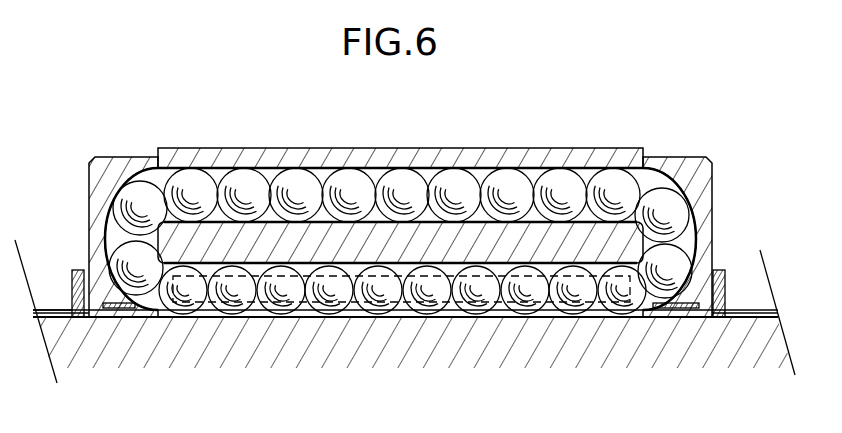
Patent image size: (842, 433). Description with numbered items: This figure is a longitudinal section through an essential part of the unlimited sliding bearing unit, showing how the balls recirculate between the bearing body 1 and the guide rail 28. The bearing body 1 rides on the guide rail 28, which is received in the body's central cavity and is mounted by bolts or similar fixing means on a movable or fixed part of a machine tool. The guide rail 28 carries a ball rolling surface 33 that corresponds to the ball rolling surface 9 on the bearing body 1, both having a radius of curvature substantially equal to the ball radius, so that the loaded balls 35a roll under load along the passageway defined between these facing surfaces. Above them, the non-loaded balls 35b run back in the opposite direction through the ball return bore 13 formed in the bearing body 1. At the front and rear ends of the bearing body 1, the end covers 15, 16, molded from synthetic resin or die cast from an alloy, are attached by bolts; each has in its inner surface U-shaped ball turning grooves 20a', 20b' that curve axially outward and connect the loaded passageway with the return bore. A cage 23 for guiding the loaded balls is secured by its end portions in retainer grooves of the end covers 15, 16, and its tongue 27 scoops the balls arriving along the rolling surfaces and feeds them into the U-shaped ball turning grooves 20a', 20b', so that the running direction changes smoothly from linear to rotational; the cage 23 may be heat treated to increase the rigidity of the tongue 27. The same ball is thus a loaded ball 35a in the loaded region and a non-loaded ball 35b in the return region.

The bearing body 1 is at (520, 165).
The ball rolling surface 9 is at (302, 276).
The ball return bore 13 is at (233, 190).
The end cover 15 is at (152, 176).
The end cover 16 is at (690, 165).
The U-shaped ball turning groove 20a' is at (707, 239).
The U-shaped ball turning groove 20b' is at (93, 239).
The cage 23 is at (110, 322).
The tongue 27 is at (137, 313).
The guide rail 28 is at (373, 404).
The ball rolling surface 33 is at (53, 313).
The loaded ball 35a is at (427, 300).
The non-loaded ball 35b is at (446, 186).